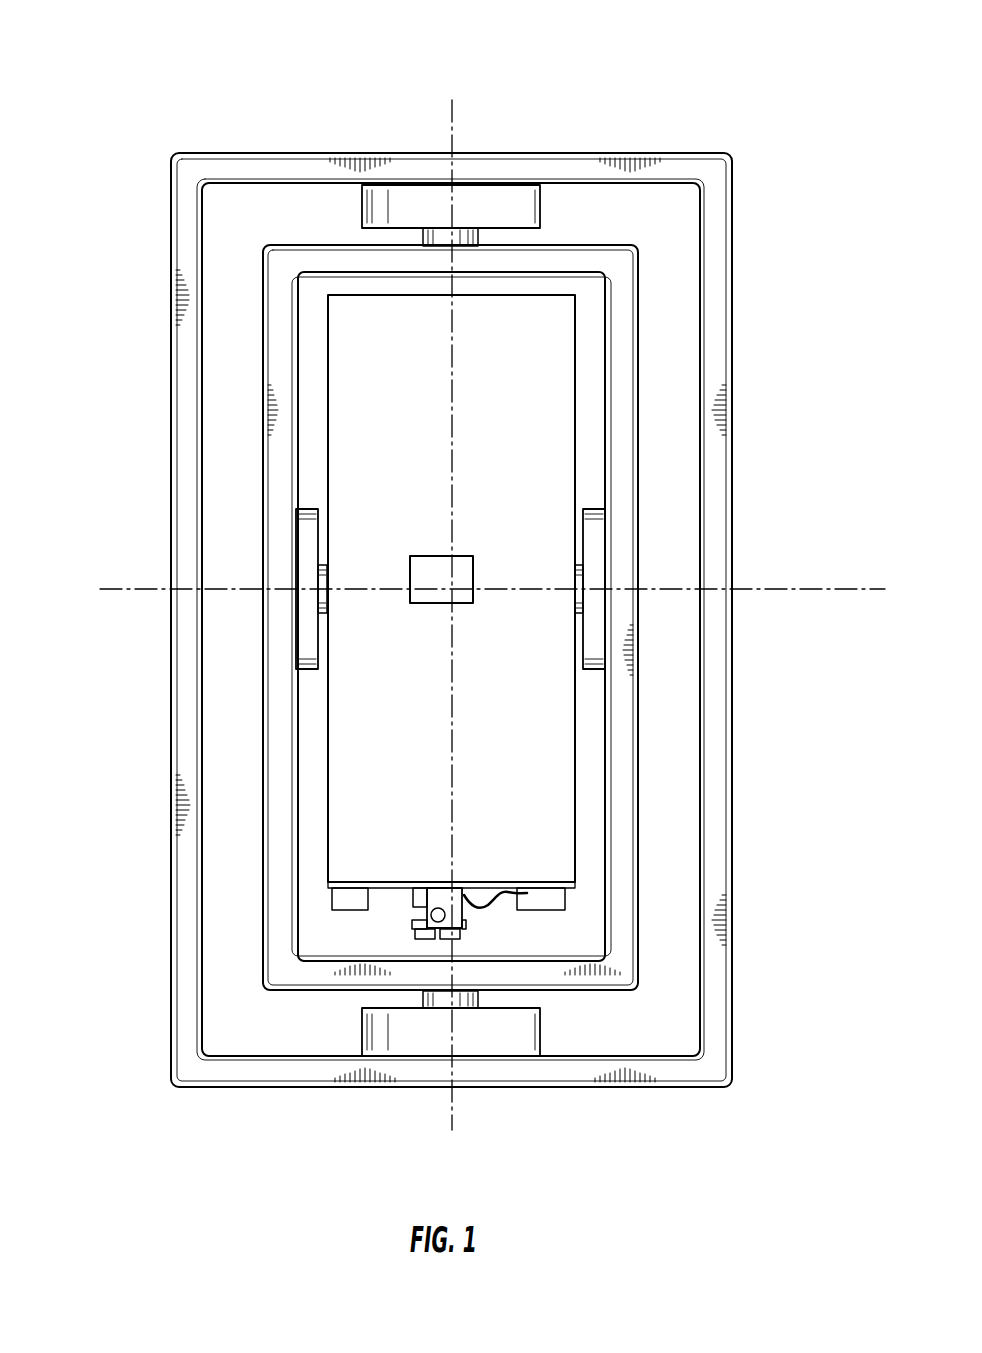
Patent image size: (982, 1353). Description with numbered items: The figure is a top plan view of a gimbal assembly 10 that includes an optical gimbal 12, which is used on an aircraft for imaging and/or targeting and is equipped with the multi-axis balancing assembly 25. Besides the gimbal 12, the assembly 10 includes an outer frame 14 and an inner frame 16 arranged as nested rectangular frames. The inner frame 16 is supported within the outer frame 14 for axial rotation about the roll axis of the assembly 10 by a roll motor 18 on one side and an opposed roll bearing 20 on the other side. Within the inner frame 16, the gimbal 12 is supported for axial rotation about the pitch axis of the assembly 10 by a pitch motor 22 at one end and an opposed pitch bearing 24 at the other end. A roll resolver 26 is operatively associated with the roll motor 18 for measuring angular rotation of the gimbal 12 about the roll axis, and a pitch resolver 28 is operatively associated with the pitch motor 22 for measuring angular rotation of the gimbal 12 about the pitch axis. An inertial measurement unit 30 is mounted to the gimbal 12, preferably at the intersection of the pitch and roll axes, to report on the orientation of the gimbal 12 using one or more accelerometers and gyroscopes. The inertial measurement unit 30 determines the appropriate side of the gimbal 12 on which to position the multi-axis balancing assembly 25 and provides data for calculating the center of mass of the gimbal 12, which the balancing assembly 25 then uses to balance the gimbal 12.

The gimbal assembly 10 is at (682, 78).
The gimbal 12 is at (558, 320).
The outer frame 14 is at (172, 375).
The inner frame 16 is at (310, 978).
The roll motor 18 is at (303, 633).
The roll bearing 20 is at (590, 632).
The pitch motor 22 is at (403, 1037).
The pitch bearing 24 is at (513, 213).
The multi-axis balancing assembly 25 is at (540, 928).
The roll resolver 26 is at (323, 616).
The pitch resolver 28 is at (497, 998).
The inertial measurement unit 30 is at (420, 556).